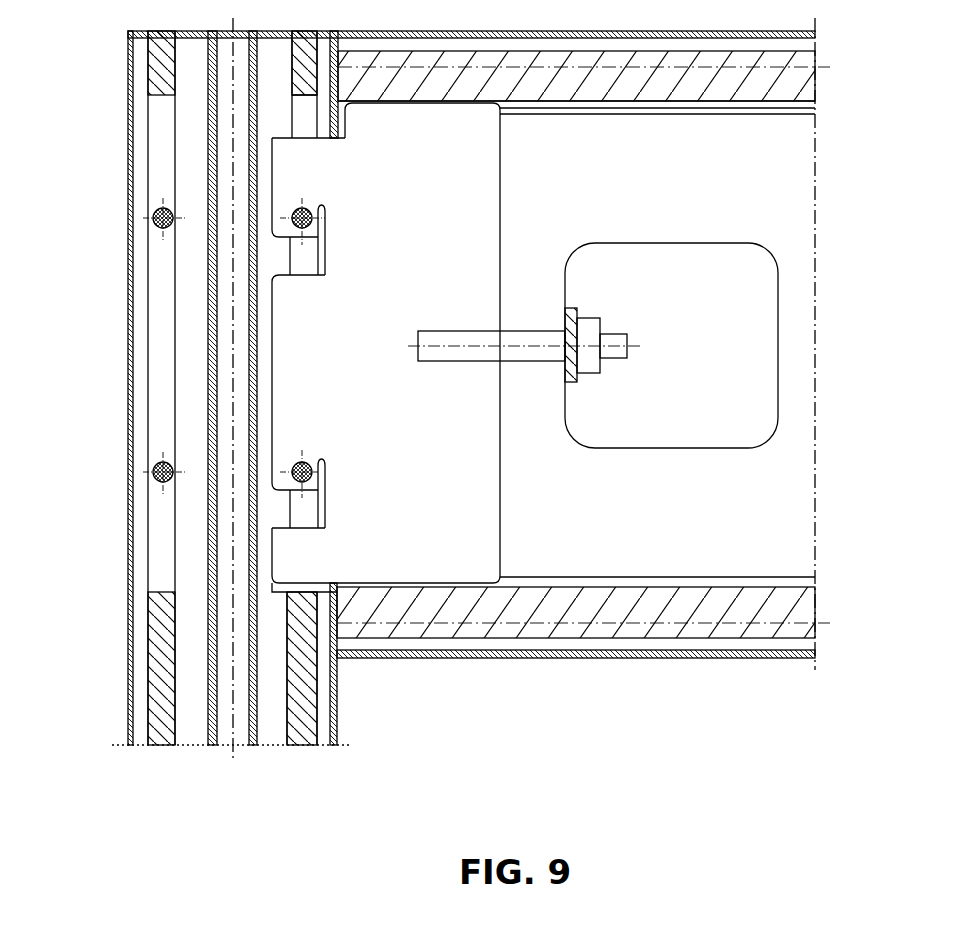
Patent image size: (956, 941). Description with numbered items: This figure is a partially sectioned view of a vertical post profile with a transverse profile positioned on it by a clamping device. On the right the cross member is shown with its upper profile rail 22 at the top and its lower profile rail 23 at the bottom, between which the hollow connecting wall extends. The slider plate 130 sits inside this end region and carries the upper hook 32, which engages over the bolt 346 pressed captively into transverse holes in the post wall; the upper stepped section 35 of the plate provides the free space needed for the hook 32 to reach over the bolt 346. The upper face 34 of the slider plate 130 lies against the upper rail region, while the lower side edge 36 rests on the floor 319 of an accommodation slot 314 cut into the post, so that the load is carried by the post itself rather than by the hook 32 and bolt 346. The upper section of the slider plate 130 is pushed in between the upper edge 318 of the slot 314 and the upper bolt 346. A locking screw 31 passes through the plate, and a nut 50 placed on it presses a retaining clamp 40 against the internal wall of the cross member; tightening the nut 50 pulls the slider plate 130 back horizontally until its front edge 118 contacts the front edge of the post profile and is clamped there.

The upper profile rail 22 is at (718, 80).
The lower profile rail 23 is at (657, 630).
The locking screw 31 is at (530, 357).
The upper hook 32 is at (282, 221).
The upper face 34 is at (445, 102).
The upper stepped section 35 is at (308, 150).
The lower side edge 36 is at (388, 585).
The retaining clamp 40 is at (578, 315).
The nut 50 is at (601, 333).
The front edge 118 is at (322, 652).
The slider plate 130 is at (468, 226).
The accommodation slot 314 is at (160, 416).
The upper edge 318 is at (162, 96).
The floor 319 is at (158, 593).
The bolt 346 is at (286, 242).